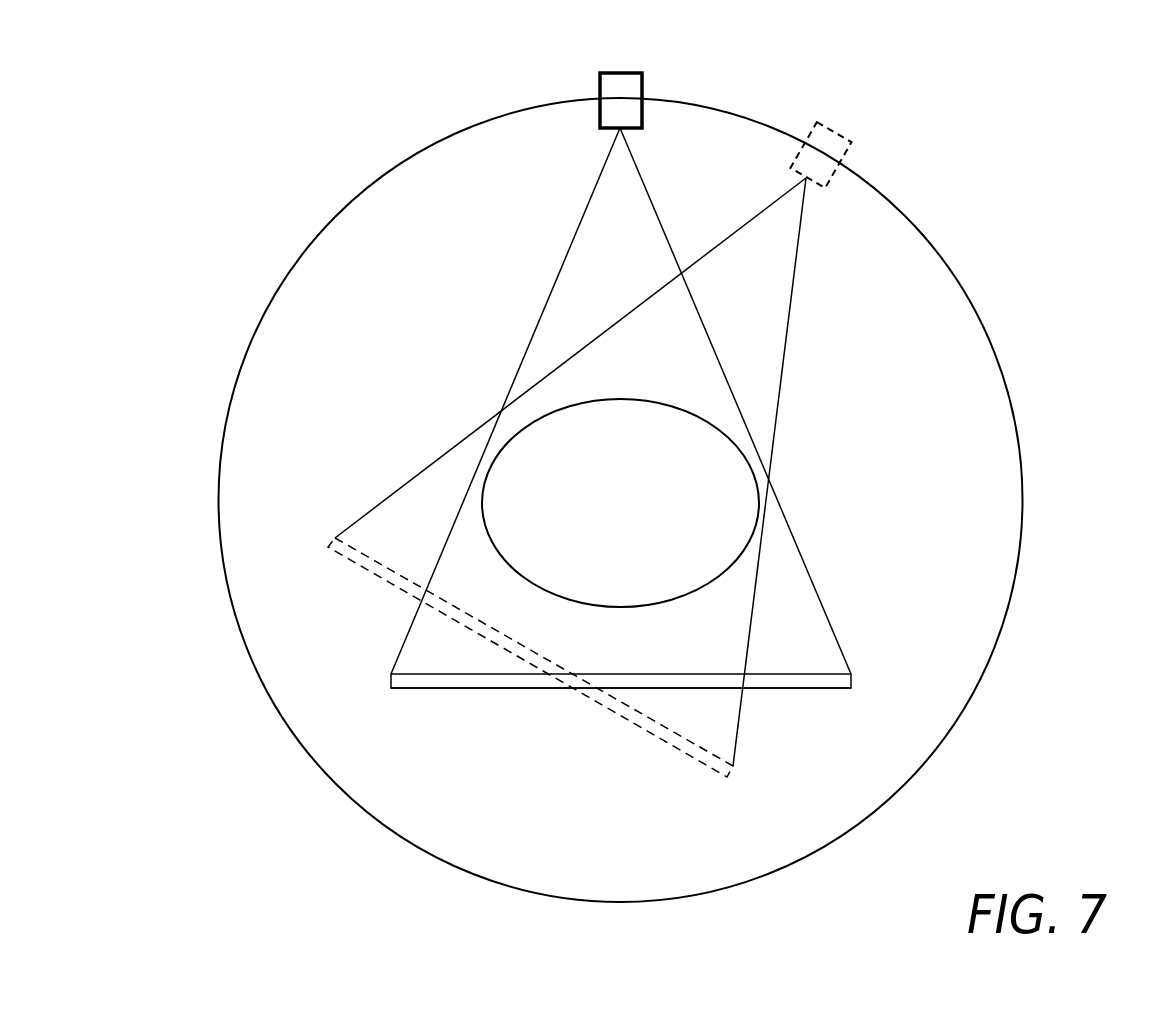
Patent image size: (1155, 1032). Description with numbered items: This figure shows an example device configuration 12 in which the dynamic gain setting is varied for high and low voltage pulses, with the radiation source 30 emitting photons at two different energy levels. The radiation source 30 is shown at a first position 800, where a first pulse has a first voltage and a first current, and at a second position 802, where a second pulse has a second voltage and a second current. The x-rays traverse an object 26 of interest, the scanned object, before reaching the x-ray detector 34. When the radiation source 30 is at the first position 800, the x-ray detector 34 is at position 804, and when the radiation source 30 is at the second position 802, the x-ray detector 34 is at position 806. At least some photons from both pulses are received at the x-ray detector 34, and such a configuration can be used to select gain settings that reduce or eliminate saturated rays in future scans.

The imaging system gantry 12 is at (298, 208).
The radiation source 30 is at (566, 85).
The first position 800 is at (618, 73).
The second position 802 is at (829, 125).
The object 26 is at (675, 384).
The x-ray detector 34 is at (370, 672).
The detector position 804 is at (468, 690).
The detector position 806 is at (700, 762).